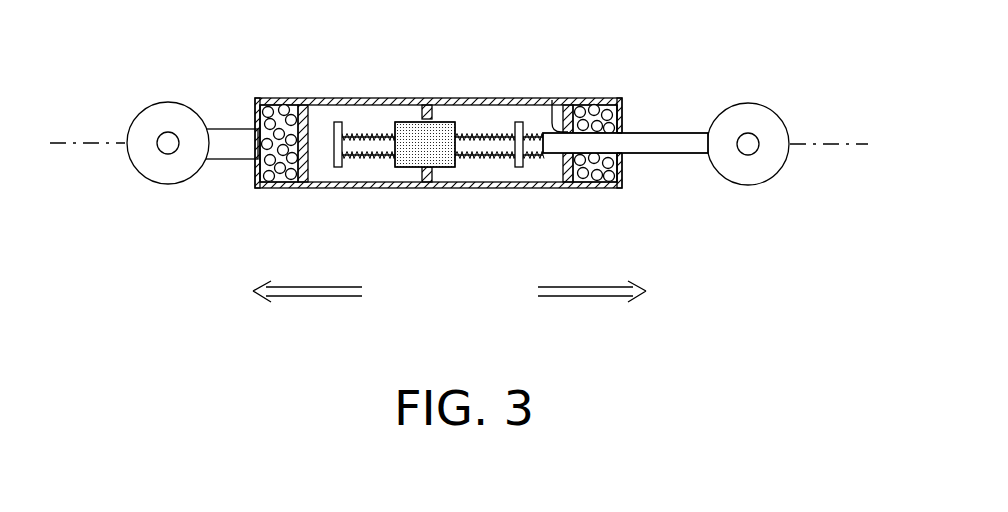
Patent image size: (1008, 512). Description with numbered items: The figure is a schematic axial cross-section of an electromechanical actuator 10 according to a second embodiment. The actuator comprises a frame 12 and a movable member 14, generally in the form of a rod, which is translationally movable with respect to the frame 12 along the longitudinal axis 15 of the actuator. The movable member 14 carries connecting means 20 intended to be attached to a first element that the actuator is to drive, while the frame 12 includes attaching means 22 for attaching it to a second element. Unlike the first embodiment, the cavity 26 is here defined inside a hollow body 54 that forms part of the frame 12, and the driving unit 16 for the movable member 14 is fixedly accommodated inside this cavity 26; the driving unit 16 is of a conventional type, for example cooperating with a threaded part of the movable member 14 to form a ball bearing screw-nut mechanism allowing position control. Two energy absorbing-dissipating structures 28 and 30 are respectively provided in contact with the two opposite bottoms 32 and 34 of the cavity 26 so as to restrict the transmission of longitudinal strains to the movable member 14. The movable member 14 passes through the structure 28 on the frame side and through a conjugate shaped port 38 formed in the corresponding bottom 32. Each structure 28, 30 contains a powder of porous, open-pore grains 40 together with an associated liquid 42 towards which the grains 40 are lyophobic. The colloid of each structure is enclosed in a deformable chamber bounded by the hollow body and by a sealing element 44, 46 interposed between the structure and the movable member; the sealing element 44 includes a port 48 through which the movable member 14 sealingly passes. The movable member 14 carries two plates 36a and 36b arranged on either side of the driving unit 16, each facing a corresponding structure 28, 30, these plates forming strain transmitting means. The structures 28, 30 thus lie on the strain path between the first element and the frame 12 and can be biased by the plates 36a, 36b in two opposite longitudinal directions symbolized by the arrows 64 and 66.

The electromechanical actuator 10 is at (495, 70).
The frame 12 is at (326, 100).
The movable member 14 is at (680, 133).
The longitudinal axis 15 is at (852, 147).
The driving unit 16 is at (442, 122).
The connecting means 20 is at (752, 170).
The attaching means 22 is at (175, 168).
The cavity 26 is at (443, 182).
The energy absorbing-dissipating structure 28 is at (279, 178).
The energy absorbing-dissipating structure 30 is at (601, 180).
The bottom of the cavity 32 is at (252, 100).
The bottom of the cavity 34 is at (622, 117).
The plate 36a is at (341, 122).
The plate 36b is at (518, 168).
The port 38 is at (628, 157).
The grains 40 is at (265, 98).
The liquid 42 is at (600, 105).
The sealing element 44 is at (303, 188).
The sealing element 46 is at (569, 188).
The port 48 is at (553, 100).
The hollow body 54 is at (370, 188).
The arrow 64 is at (313, 297).
The arrow 66 is at (600, 297).